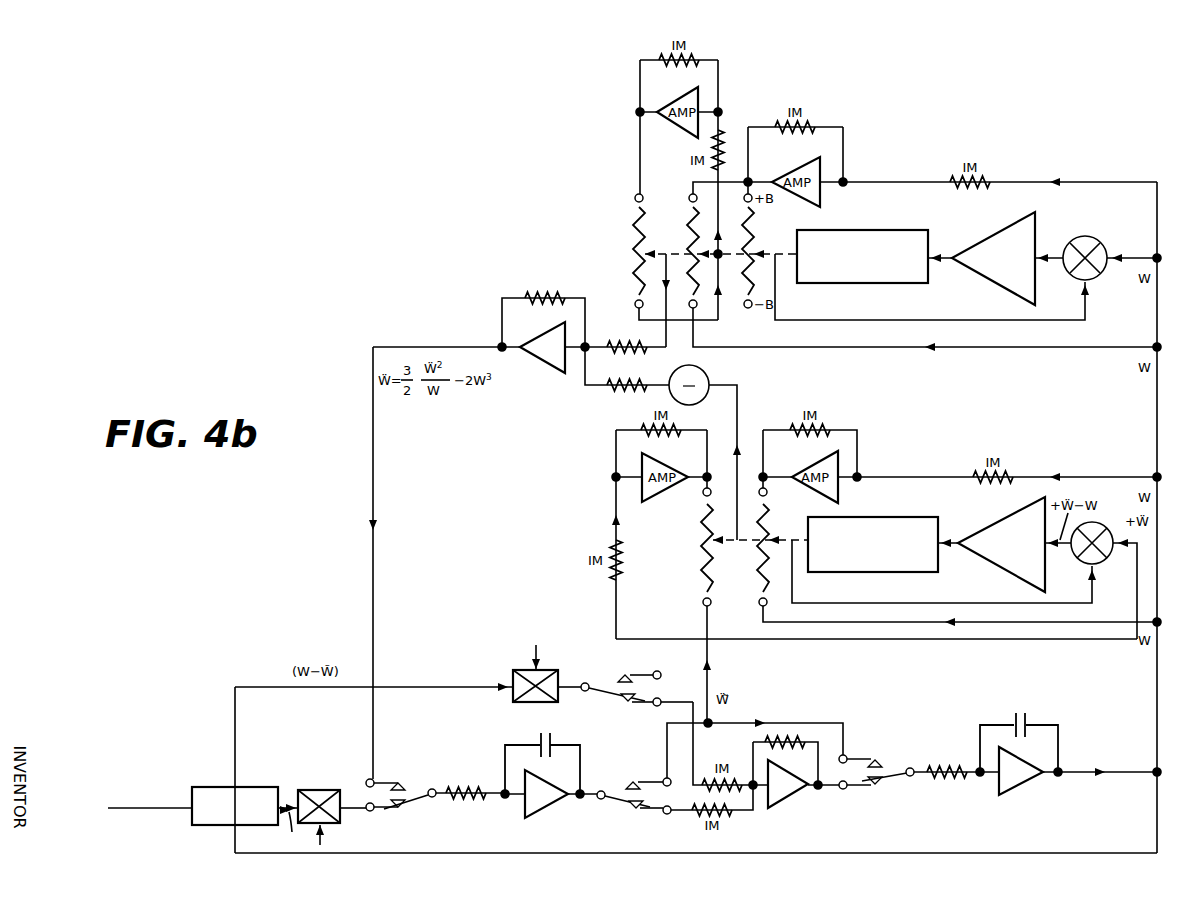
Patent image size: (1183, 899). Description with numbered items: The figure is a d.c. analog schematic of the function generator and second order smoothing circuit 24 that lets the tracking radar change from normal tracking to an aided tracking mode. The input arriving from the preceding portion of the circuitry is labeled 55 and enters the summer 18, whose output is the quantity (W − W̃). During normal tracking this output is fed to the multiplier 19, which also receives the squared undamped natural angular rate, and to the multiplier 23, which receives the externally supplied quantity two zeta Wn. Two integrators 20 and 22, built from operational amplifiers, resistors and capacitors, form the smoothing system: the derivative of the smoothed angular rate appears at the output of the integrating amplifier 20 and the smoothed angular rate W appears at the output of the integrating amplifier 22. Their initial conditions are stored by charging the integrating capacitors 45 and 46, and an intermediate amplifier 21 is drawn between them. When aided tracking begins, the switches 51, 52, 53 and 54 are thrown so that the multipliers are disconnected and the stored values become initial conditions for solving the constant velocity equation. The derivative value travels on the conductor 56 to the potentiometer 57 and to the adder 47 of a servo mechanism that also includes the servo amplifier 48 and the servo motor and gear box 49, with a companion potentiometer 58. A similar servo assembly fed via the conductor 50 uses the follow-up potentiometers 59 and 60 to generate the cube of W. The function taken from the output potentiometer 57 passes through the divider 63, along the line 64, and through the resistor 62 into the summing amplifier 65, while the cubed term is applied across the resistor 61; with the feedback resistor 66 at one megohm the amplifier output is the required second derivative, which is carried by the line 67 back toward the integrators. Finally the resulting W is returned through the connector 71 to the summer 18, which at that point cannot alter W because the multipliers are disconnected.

The summer 18 is at (252, 789).
The multiplier 19 is at (325, 790).
The integrating amplifier 20 is at (548, 810).
The amplifier 21 is at (797, 793).
The integrating amplifier 22 is at (1030, 777).
The multiplier 23 is at (523, 670).
The second order smoothing circuit 24 is at (410, 325).
The integrating capacitor 45 is at (553, 743).
The integrating capacitor 46 is at (1028, 716).
The adder 47 is at (1093, 240).
The servo amplifier 48 is at (990, 238).
The servo motor and gear box 49 is at (870, 229).
The conductor 50 is at (1155, 405).
The switch 51 is at (628, 792).
The switch 52 is at (620, 686).
The switch 53 is at (880, 782).
The switch 54 is at (410, 806).
The input from FIG. 4a 55 is at (108, 808).
The conductor 56 is at (712, 677).
The potentiometer 57 is at (700, 552).
The potentiometer 58 is at (760, 552).
The follow-up potentiometer 59 is at (633, 244).
The follow-up potentiometer 60 is at (688, 242).
The 0.5 megohm resistor 61 is at (616, 341).
The 0.333 megohm resistor 62 is at (610, 394).
The divider 63 is at (707, 378).
The connecting line 64 is at (738, 422).
The summing amplifier 65 is at (545, 365).
The feedback resistor 66 is at (530, 293).
The output line 67 is at (372, 553).
The connector 71 is at (716, 855).